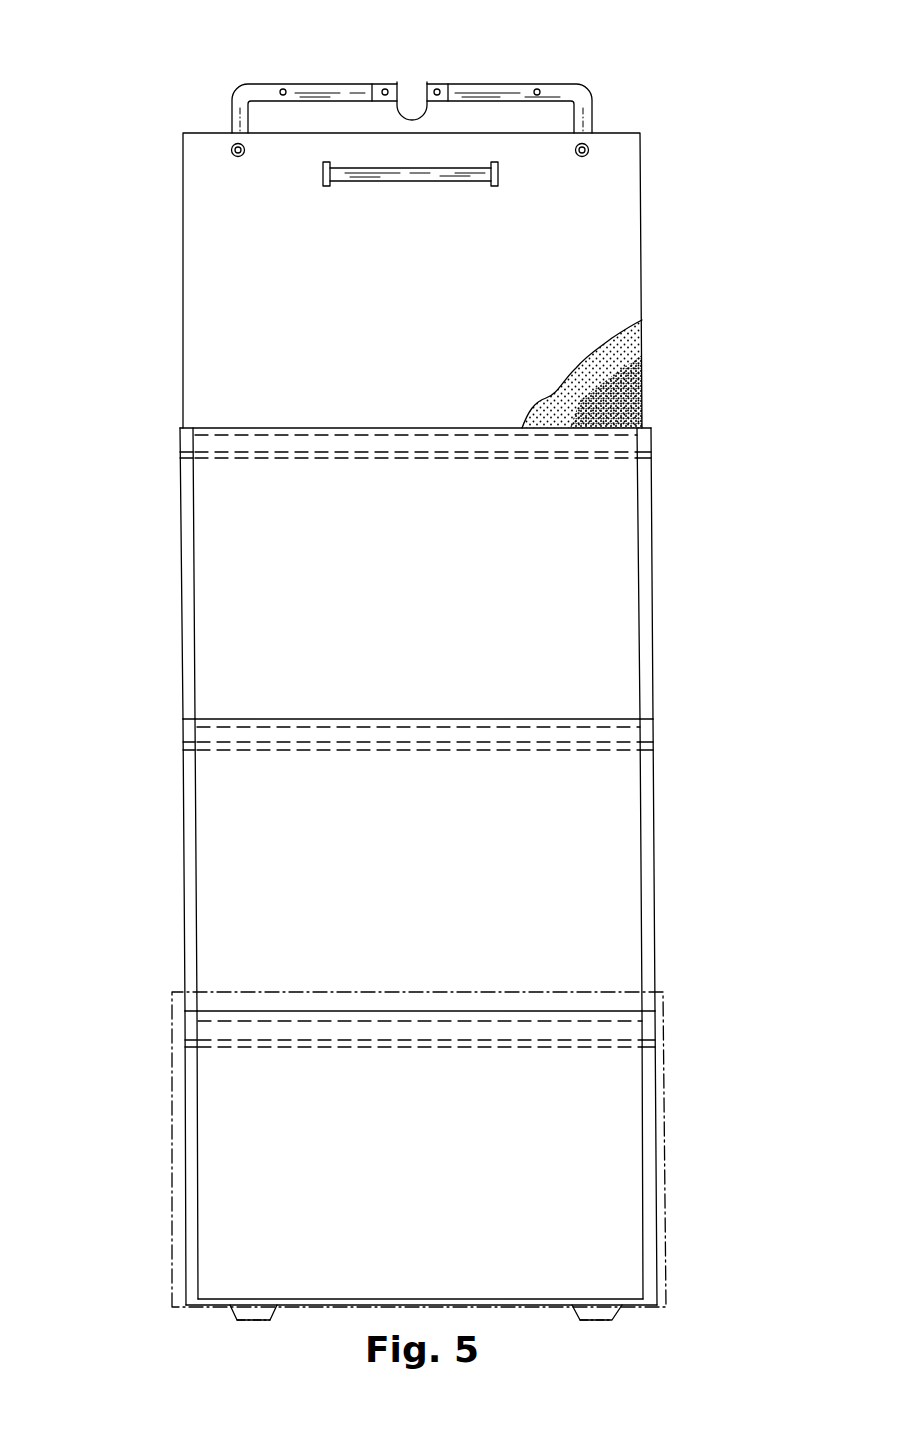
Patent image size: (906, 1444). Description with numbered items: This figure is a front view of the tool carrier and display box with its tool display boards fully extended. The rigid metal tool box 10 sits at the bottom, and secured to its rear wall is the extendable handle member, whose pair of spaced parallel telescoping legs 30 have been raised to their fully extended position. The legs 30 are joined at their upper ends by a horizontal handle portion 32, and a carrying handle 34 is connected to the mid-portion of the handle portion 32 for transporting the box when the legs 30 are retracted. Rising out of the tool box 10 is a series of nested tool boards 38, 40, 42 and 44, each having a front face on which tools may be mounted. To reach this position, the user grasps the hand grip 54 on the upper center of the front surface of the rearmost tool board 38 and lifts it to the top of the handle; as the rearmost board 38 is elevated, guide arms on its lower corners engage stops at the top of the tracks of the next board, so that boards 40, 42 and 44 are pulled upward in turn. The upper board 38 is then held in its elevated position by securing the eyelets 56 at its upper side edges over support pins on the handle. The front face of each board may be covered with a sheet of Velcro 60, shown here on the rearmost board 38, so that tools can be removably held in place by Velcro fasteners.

The tool box 10 is at (665, 1165).
The telescoping legs 30 is at (228, 106).
The horizontal handle portion 32 is at (365, 92).
The carrying handle 34 is at (415, 88).
The tool board 38 is at (205, 308).
The tool board 40 is at (215, 583).
The tool board 42 is at (215, 830).
The tool board 44 is at (625, 1107).
The hand grip 54 is at (453, 182).
The eyelets 56 is at (592, 152).
The sheet of Velcro 60 is at (642, 376).